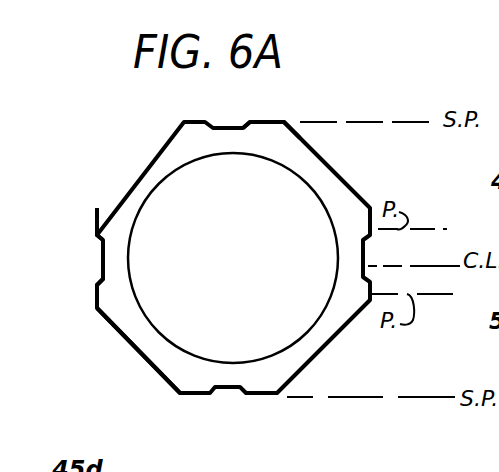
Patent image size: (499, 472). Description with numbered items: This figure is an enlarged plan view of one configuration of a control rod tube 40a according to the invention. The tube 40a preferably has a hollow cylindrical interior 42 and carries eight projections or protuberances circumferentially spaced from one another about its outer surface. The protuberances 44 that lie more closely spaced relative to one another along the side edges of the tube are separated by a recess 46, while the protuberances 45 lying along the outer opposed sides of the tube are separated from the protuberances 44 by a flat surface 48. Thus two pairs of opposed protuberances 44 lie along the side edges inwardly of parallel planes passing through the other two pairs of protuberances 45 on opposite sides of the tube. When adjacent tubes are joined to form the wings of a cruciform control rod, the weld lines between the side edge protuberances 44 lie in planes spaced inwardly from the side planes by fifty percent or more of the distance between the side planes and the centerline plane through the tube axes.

The tube 40a is at (141, 165).
The hollow cylindrical interior 42 is at (250, 157).
The protuberances 44 is at (106, 227).
The protuberances 45 is at (272, 135).
The recess 46 is at (101, 268).
The flat surface 48 is at (140, 330).